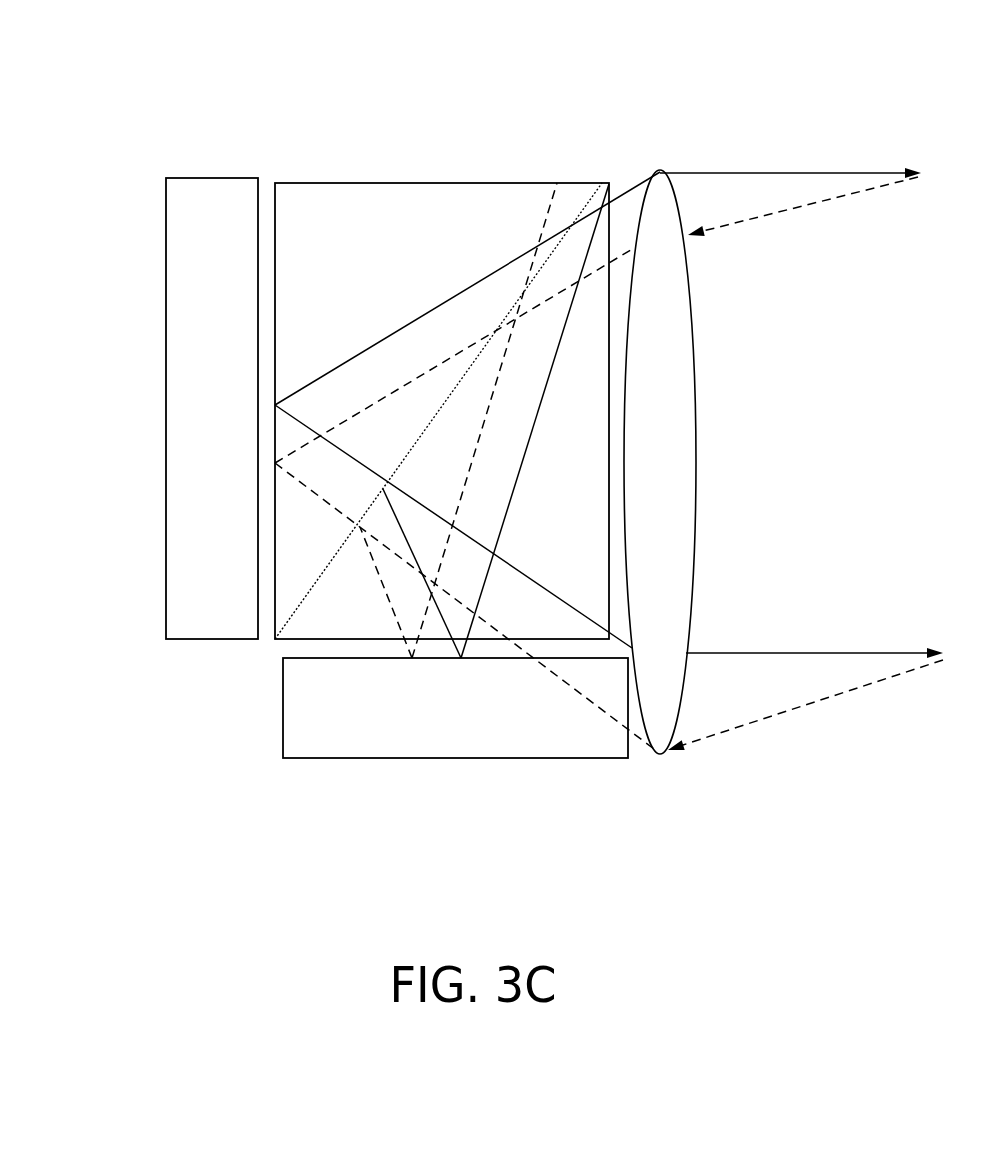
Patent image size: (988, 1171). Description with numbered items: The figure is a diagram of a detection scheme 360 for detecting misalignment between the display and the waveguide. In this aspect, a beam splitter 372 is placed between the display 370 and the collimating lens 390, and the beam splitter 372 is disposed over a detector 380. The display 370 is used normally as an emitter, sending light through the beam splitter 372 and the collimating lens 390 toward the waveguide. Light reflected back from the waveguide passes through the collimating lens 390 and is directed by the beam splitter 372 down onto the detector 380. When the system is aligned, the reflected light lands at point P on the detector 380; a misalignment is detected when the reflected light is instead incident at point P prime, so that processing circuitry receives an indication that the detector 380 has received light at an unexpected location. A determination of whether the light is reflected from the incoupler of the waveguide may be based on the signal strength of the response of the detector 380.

The eye tracking system 360 is at (96, 104).
The display 370 is at (178, 575).
The beam splitter 372 is at (393, 187).
The detector 380 is at (430, 753).
The collimating lens 390 is at (662, 202).